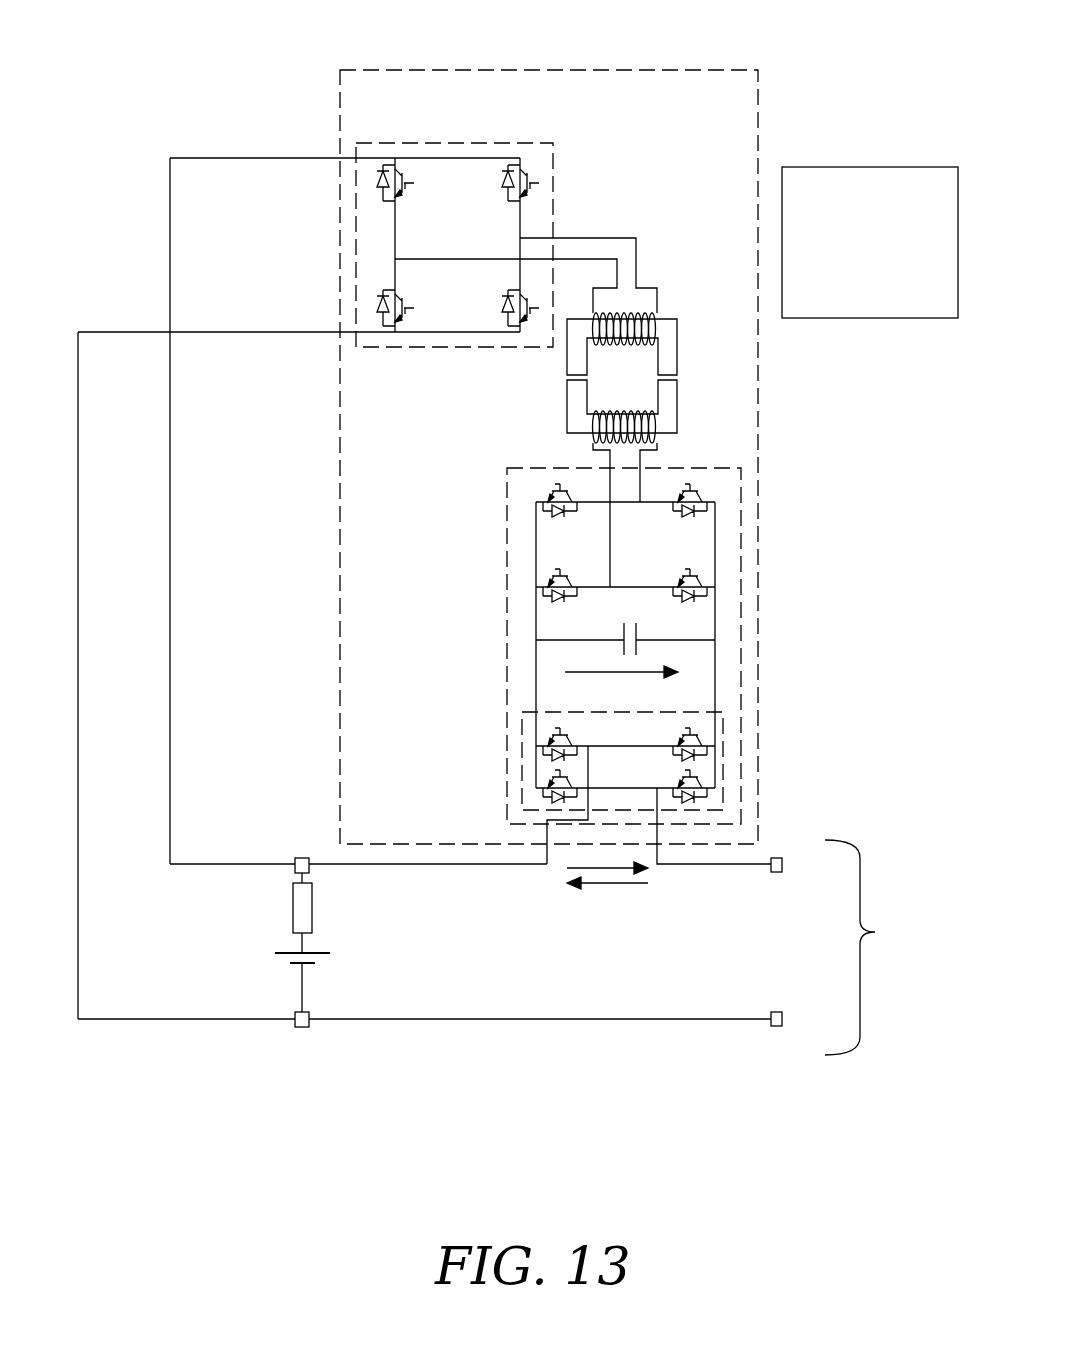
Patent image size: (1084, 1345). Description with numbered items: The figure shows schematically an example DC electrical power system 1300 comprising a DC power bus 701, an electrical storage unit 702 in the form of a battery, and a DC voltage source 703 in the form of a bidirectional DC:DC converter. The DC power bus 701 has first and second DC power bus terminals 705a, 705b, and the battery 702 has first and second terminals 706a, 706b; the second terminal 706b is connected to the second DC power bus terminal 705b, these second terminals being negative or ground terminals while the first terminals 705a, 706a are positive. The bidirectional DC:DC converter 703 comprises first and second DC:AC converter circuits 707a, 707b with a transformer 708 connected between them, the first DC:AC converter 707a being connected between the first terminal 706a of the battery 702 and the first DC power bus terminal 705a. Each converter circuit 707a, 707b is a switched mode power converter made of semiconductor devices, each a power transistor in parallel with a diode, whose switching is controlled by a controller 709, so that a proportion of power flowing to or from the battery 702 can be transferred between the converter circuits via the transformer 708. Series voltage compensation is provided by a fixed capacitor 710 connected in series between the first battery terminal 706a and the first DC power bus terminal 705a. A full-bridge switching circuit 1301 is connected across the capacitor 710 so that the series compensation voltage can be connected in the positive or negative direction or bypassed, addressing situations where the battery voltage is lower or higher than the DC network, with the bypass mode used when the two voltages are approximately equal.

The electrical power system 1300 is at (213, 46).
The DC voltage source 703 is at (758, 97).
The controller 709 is at (870, 242).
The second DC:AC converter circuit 707b is at (502, 143).
The transformer 708 is at (568, 363).
The first DC:AC converter circuit 707a is at (507, 510).
The capacitor 710 is at (623, 638).
The full-bridge switching circuit 1301 is at (723, 758).
The first terminal of the electrical storage unit 706a is at (295, 866).
The second terminal of the electrical storage unit 706b is at (297, 1012).
The electrical storage unit 702 is at (320, 952).
The first DC power bus terminal 705a is at (776, 873).
The second DC power bus terminal 705b is at (776, 1027).
The DC power bus 701 is at (876, 932).